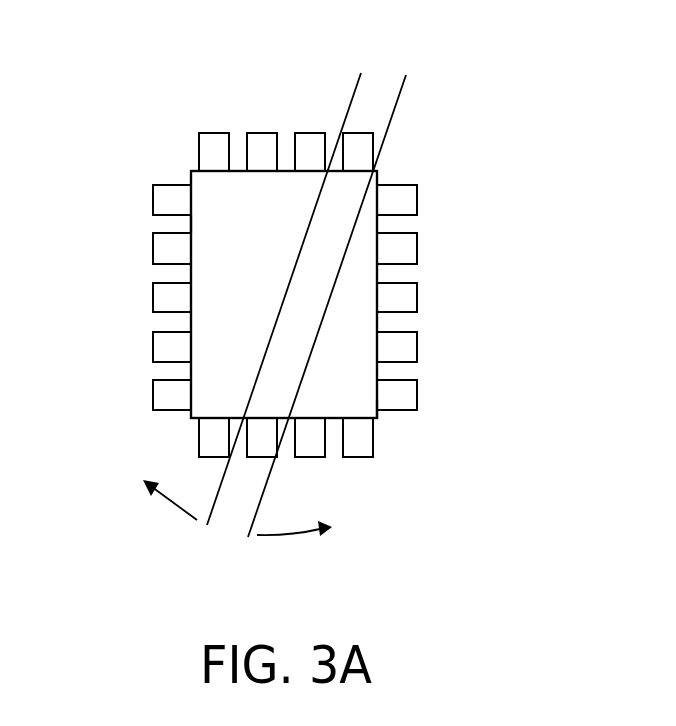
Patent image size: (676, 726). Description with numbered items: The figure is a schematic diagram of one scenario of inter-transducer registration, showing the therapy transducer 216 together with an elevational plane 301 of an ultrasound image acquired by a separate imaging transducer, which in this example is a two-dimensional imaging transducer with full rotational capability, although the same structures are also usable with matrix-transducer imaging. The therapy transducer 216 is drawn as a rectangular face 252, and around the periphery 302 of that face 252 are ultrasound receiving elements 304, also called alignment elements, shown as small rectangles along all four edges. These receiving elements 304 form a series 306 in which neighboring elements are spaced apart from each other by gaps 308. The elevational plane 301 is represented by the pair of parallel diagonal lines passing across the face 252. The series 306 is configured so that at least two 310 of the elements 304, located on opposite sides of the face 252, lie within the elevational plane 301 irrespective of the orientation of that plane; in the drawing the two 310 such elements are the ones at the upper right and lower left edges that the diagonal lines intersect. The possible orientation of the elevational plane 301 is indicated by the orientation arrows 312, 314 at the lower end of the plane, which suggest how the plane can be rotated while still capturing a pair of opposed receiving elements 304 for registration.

The face 252 is at (262, 215).
The therapy transducer 216 is at (358, 399).
The elevational plane 301 is at (383, 85).
The periphery 302 is at (187, 318).
The ultrasound receiving elements 304 is at (168, 393).
The series 306 is at (400, 433).
The gaps 308 is at (150, 223).
The at least two of the elements 310 is at (358, 133).
The orientation arrow 312 is at (175, 510).
The orientation arrow 314 is at (292, 537).